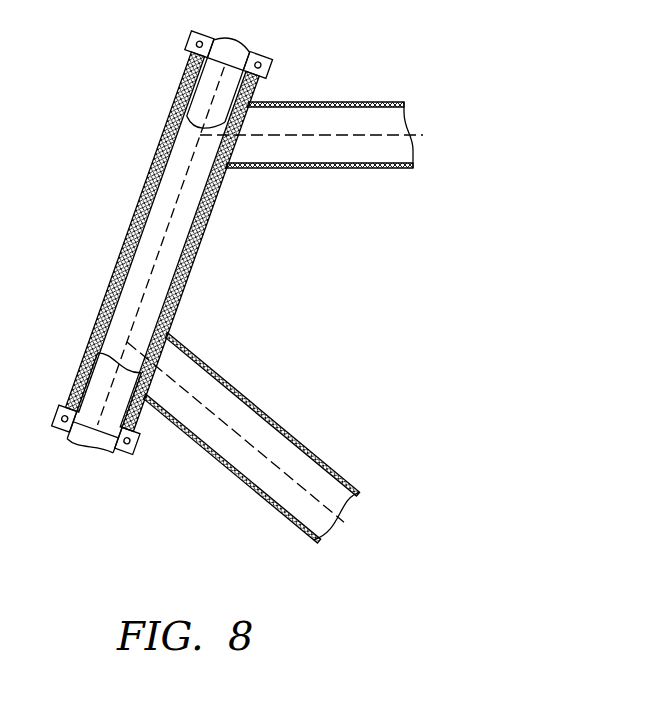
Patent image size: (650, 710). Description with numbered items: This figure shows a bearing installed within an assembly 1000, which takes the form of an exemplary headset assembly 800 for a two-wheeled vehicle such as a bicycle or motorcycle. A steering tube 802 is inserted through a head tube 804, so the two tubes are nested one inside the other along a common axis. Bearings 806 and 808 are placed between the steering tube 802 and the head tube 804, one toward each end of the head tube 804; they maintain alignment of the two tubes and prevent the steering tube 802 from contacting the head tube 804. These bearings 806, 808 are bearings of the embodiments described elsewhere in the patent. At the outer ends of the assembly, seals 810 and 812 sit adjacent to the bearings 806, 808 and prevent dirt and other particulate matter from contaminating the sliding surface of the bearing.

The assembly 1000 is at (422, 77).
The headset assembly 800 is at (439, 118).
The steering tube 802 is at (250, 52).
The head tube 804 is at (157, 147).
The bearing 806 is at (190, 48).
The bearing 808 is at (82, 380).
The seal 810 is at (270, 72).
The seal 812 is at (123, 453).